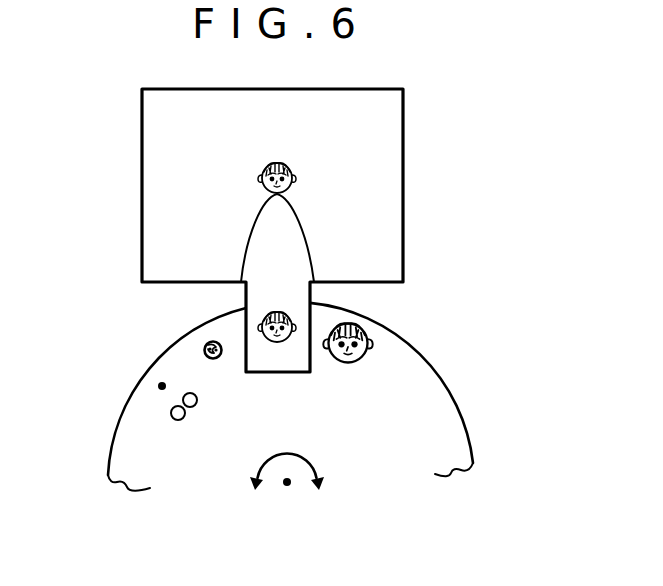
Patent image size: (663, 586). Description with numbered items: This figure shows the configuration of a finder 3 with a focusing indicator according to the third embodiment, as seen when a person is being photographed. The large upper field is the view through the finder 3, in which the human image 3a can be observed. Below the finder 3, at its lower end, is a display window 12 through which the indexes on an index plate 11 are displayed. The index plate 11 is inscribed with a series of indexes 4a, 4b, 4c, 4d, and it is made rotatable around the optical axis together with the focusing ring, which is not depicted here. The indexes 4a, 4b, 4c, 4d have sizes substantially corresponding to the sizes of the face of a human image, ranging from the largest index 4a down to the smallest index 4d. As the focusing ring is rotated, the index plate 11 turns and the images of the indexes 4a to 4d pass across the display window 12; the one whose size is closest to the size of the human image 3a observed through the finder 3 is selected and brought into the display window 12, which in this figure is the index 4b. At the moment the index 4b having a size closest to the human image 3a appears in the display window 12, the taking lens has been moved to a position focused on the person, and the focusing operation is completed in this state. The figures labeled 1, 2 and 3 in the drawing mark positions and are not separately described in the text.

The human image 3a is at (403, 154).
The index plate 11 is at (452, 387).
The display window 12 is at (268, 296).
The index 4a is at (383, 343).
The index 4b is at (201, 341).
The index 4c is at (200, 352).
The index 4d is at (152, 386).
The position 1 is at (347, 358).
The position 2 is at (277, 341).
The finder 3 is at (200, 392).